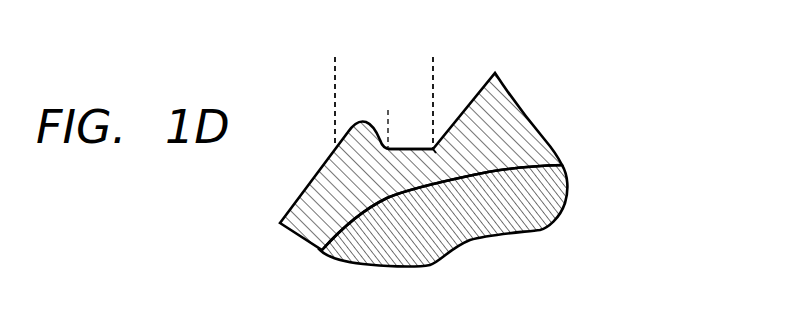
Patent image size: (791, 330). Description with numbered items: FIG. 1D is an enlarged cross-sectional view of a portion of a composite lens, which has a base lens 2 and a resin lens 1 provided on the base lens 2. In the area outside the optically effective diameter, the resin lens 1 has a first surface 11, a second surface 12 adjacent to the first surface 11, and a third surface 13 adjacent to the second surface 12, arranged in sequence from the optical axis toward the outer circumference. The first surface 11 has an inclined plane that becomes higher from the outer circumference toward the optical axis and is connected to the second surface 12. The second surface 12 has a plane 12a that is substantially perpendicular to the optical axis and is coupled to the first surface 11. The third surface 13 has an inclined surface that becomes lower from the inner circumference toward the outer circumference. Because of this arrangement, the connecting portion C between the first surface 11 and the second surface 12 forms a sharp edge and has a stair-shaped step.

The resin lens 1 is at (517, 110).
The base lens 2 is at (552, 200).
The connecting portion C is at (436, 154).
The first surface 11 is at (493, 57).
The second surface 12 is at (432, 57).
The third surface 13 is at (337, 57).
The plane 12a is at (433, 110).